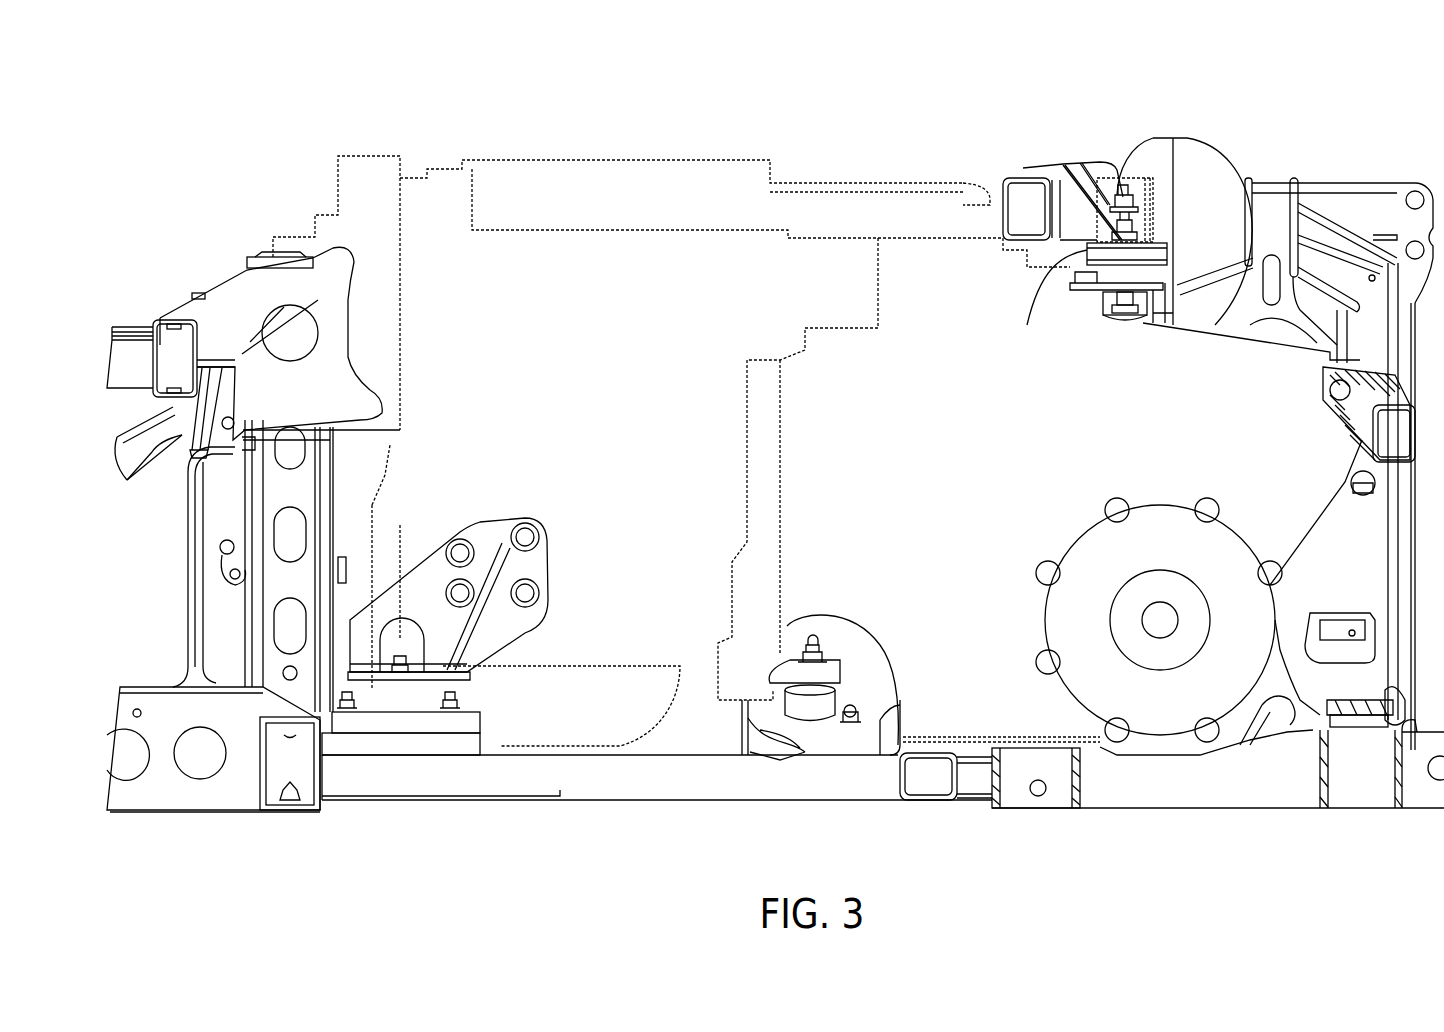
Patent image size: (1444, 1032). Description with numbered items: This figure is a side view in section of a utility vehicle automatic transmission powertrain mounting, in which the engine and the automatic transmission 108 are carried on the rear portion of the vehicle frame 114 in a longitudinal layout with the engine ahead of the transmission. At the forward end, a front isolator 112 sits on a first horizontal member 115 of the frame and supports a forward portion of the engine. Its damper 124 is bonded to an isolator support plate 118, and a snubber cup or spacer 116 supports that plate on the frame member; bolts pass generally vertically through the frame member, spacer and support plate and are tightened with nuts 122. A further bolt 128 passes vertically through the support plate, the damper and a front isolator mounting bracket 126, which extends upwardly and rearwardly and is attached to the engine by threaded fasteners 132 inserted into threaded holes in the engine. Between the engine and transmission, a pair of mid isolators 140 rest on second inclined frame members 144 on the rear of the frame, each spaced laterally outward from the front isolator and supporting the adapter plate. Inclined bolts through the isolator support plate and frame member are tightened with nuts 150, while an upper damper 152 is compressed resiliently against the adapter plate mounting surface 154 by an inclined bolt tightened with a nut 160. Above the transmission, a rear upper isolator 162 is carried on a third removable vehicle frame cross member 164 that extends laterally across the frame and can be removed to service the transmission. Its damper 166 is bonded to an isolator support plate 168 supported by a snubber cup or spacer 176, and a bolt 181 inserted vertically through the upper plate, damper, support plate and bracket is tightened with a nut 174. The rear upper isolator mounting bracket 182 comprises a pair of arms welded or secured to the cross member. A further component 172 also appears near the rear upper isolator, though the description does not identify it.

The transmission 108 is at (1082, 305).
The front isolator 112 is at (443, 663).
The vehicle frame 114 is at (500, 745).
The first horizontal member 115 is at (397, 745).
The snubber cup or spacer 116 is at (447, 735).
The isolator support plate 118 is at (358, 720).
The nuts 122 is at (401, 658).
The damper 124 is at (450, 727).
The front isolator mounting bracket 126 is at (492, 547).
The bolt 128 is at (430, 645).
The threaded fasteners 132 is at (497, 537).
The mid isolators 140 is at (752, 634).
The second inclined frame members 144 is at (767, 713).
The nuts 150 is at (840, 682).
The upper damper 152 is at (835, 705).
The adapter plate mounting surface 154 is at (792, 668).
The nut 160 is at (815, 652).
The rear upper isolator 162 is at (1132, 183).
The third removable vehicle frame cross member 164 is at (1003, 217).
The damper 166 is at (1143, 240).
The isolator support plate 168 is at (1167, 228).
The frame bracket 172 is at (1218, 292).
The nut 174 is at (1140, 307).
The snubber cup or spacer 176 is at (1070, 285).
The bolt 181 is at (1117, 312).
The rear upper isolator mounting bracket 182 is at (1075, 205).